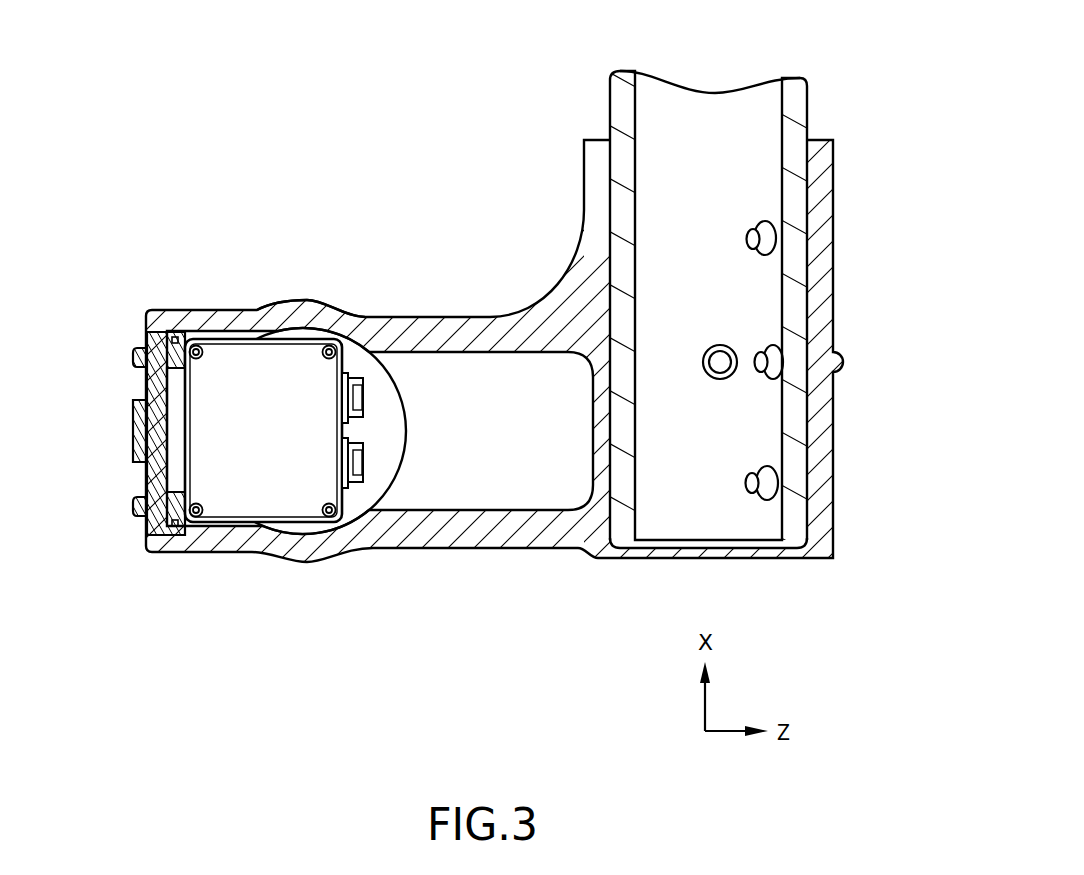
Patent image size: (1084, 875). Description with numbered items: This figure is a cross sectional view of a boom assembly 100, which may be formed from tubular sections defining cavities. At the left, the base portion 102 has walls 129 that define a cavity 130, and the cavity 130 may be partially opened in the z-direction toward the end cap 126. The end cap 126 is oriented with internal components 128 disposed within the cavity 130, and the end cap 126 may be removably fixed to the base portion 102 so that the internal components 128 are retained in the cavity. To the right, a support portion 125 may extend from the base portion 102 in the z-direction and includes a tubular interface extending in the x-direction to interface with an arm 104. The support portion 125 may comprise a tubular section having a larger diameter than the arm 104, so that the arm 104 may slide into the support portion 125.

The boom assembly 100 is at (325, 95).
The base portion 102 is at (378, 327).
The arm 104 is at (795, 107).
The support portion 125 is at (823, 183).
The end cap 126 is at (145, 383).
The internal components 128 is at (265, 357).
The walls 129 is at (318, 313).
The cavity 130 is at (353, 347).